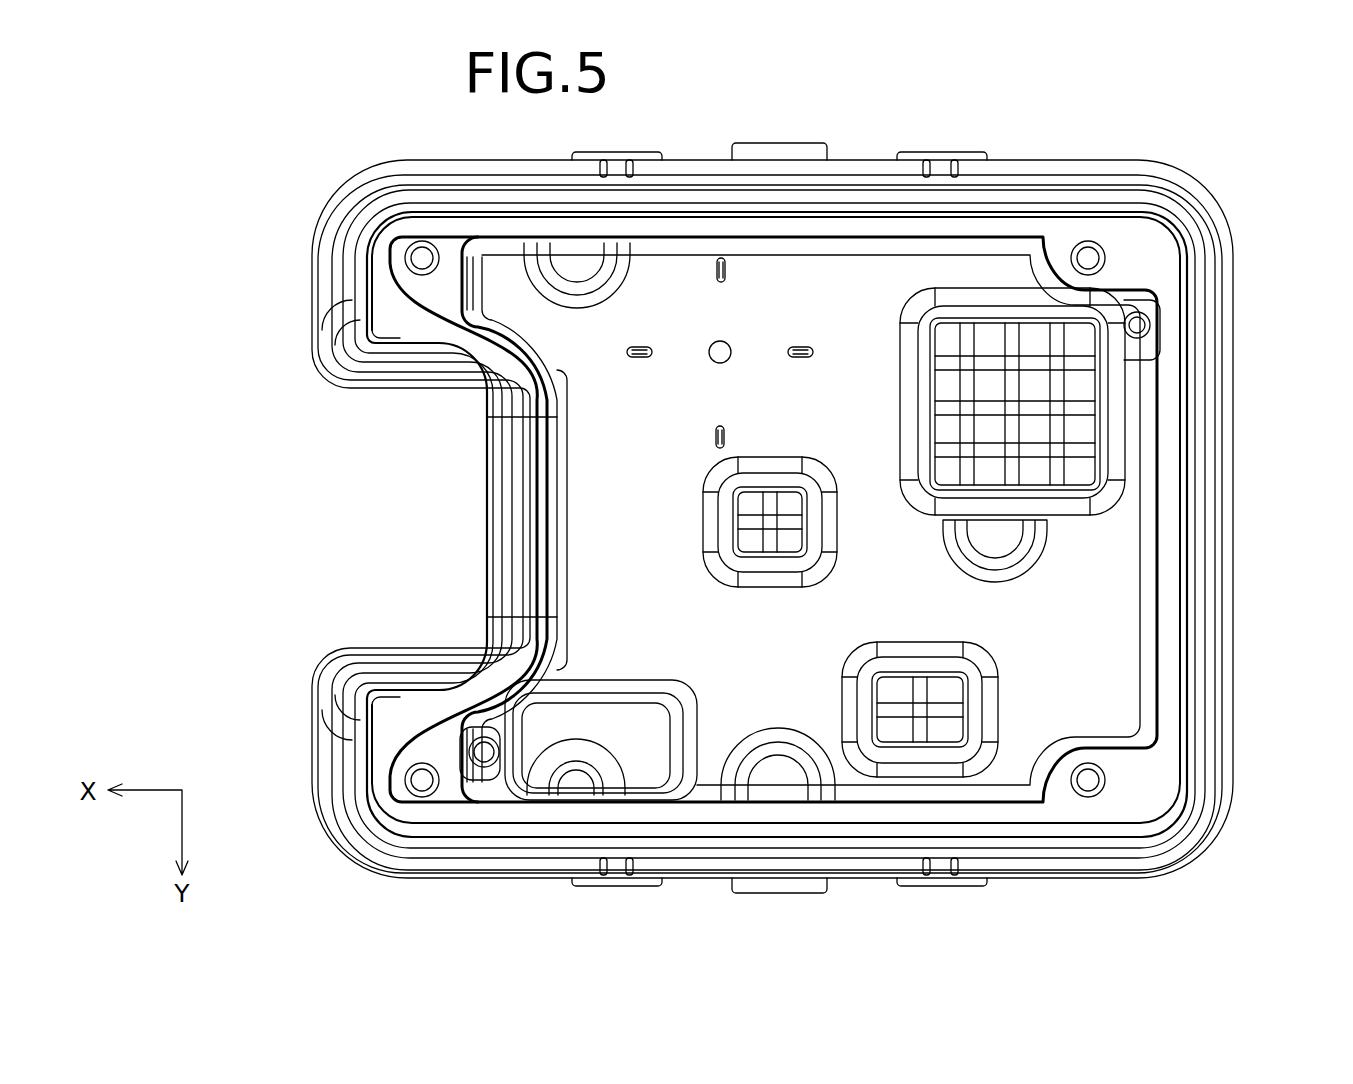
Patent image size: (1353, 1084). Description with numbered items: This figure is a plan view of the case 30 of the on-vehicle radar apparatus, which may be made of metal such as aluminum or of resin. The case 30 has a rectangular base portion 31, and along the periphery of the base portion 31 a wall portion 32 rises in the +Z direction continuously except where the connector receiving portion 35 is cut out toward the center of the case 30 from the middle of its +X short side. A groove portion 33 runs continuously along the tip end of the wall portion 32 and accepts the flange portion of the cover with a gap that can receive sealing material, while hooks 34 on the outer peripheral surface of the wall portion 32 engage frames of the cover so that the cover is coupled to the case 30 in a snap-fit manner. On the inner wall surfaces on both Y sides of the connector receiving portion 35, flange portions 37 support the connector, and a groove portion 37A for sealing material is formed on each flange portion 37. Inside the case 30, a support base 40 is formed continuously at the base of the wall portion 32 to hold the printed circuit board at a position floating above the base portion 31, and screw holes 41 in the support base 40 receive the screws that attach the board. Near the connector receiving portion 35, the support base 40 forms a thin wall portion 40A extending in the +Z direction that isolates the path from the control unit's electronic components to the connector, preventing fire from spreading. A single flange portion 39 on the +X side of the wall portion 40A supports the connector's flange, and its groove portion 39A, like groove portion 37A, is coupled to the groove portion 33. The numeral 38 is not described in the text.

The case 30 is at (284, 141).
The base portion 31 is at (1082, 603).
The wall portion 32 is at (386, 848).
The groove portion 33 is at (373, 837).
The hook 34 is at (620, 152).
The connector receiving portion 35 is at (294, 522).
The flange portion 37 is at (400, 400).
The groove portion 37A is at (413, 357).
The recess bottom wall 38 is at (487, 537).
The flange portion 39 is at (487, 502).
The groove portion 39A is at (515, 582).
The support base 40 is at (1140, 773).
The wall portion 40A is at (560, 470).
The screw hole 41 is at (420, 255).